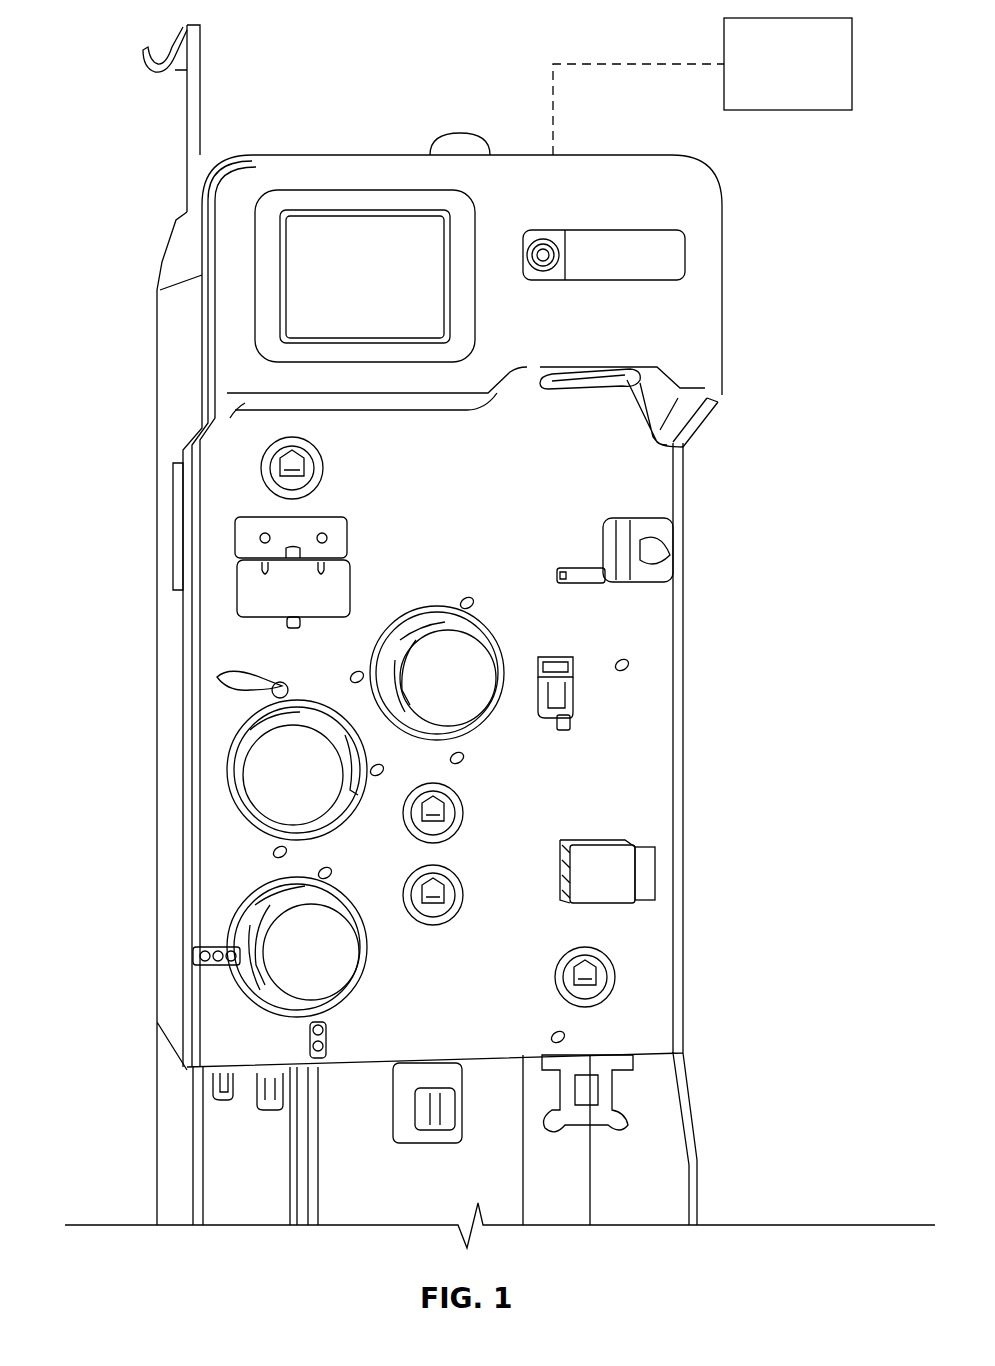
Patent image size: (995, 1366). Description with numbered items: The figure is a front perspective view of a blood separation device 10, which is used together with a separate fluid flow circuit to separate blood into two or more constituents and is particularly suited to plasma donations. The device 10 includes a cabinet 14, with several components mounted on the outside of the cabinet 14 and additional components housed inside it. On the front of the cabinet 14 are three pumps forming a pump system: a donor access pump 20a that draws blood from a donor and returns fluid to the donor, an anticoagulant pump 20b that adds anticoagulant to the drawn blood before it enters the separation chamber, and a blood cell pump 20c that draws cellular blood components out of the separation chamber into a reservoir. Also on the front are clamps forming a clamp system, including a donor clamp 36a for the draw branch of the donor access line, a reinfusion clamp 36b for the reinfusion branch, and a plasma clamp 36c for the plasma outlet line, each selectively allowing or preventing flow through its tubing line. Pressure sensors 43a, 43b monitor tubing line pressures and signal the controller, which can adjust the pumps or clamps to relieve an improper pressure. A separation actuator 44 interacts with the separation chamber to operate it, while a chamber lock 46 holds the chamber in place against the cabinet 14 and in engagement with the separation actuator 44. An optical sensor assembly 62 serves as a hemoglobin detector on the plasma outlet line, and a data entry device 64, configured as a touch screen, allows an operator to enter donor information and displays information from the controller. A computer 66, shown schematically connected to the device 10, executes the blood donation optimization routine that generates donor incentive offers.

The blood separation device 10 is at (165, 574).
The cabinet 14 is at (710, 300).
The donor access pump 20a is at (285, 950).
The anticoagulant pump 20b is at (262, 787).
The blood cell pump 20c is at (470, 665).
The donor clamp 36a is at (463, 808).
The reinfusion clamp 36b is at (262, 470).
The plasma clamp 36c is at (607, 980).
The pressure sensor 43a is at (260, 537).
The pressure sensor 43b is at (318, 527).
The separation actuator 44 is at (630, 378).
The chamber lock 46 is at (662, 538).
The optical sensor assembly 62 is at (602, 875).
The data entry device 64 is at (365, 276).
The computer 66 is at (702, 86).